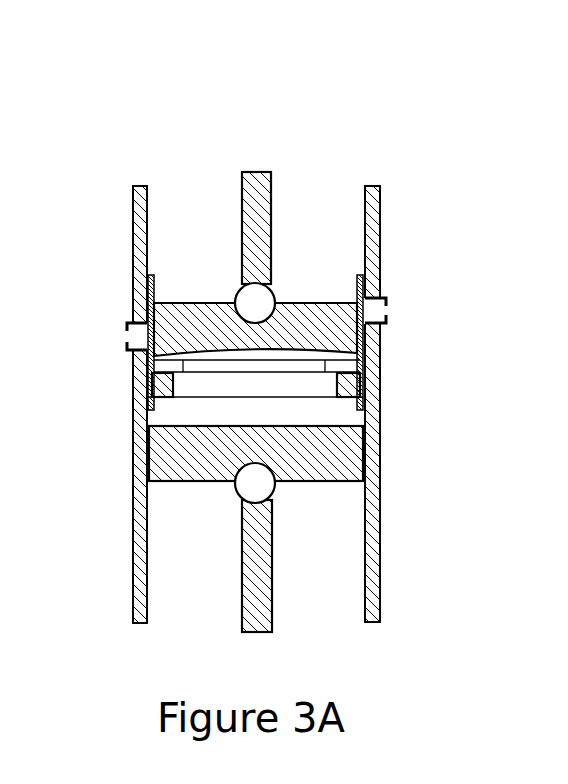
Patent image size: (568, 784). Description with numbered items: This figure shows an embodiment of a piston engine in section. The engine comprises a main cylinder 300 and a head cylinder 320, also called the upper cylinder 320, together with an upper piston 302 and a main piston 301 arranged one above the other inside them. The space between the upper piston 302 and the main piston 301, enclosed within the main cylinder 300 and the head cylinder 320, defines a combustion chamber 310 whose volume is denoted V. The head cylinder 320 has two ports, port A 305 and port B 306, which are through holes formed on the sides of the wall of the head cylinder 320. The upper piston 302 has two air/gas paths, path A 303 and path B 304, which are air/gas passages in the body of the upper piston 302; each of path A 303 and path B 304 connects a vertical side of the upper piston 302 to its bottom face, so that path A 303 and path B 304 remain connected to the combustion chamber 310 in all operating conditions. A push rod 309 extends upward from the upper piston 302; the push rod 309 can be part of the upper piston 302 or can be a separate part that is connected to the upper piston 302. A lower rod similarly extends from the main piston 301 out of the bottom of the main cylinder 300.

The main cylinder 300 is at (378, 515).
The main piston 301 is at (217, 457).
The upper piston 302 is at (288, 333).
The path A 303 is at (167, 363).
The path B 304 is at (342, 363).
The port A 305 is at (130, 323).
The port B 306 is at (385, 300).
The push rod 309 is at (255, 227).
The combustion chamber 310 is at (227, 411).
The head cylinder 320 is at (382, 387).